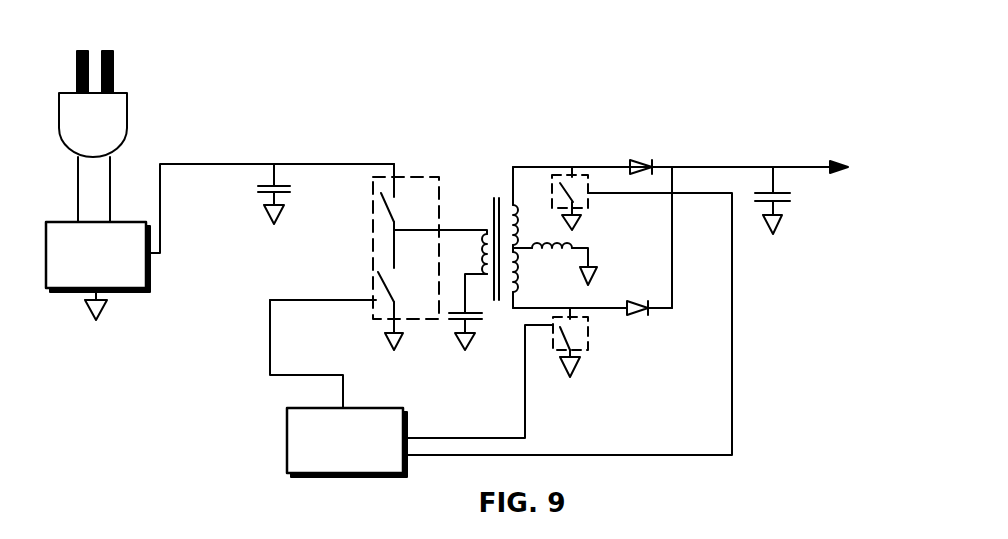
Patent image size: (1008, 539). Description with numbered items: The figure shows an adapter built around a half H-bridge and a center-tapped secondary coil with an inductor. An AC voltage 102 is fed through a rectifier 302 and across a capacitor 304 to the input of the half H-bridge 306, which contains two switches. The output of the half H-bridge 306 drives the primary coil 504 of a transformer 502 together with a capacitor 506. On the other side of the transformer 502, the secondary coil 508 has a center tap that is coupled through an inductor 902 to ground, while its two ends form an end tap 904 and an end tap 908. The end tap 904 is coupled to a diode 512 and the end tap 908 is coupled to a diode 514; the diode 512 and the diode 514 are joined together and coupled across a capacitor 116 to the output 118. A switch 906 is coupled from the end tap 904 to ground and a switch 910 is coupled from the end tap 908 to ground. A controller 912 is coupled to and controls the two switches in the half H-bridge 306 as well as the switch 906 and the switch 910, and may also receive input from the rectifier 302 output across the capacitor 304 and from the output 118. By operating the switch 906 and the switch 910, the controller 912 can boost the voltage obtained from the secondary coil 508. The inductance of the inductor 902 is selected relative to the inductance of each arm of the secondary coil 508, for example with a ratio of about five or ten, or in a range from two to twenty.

The AC voltage 102 is at (134, 83).
The rectifier 302 is at (220, 242).
The capacitor 304 is at (247, 187).
The half H-bridge 306 is at (371, 212).
The primary coil 504 is at (483, 217).
The capacitor 506 is at (449, 323).
The transformer 502 is at (492, 198).
The secondary coil 508 is at (507, 197).
The end tap 904 is at (515, 157).
The switch 906 is at (593, 167).
The diode 512 is at (643, 152).
The capacitor 116 is at (795, 178).
The output 118 is at (838, 183).
The inductor 902 is at (560, 257).
The diode 514 is at (657, 322).
The end tap 908 is at (514, 318).
The switch 910 is at (593, 356).
The controller 912 is at (338, 388).